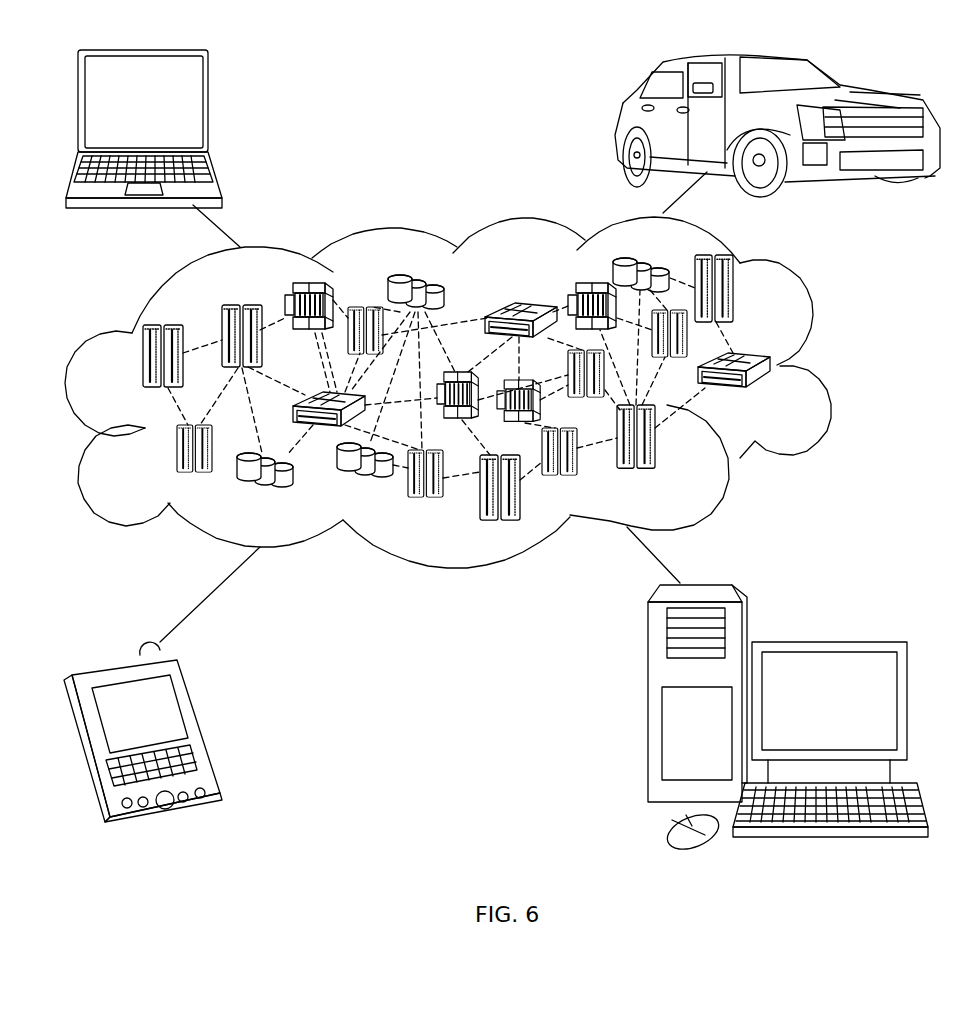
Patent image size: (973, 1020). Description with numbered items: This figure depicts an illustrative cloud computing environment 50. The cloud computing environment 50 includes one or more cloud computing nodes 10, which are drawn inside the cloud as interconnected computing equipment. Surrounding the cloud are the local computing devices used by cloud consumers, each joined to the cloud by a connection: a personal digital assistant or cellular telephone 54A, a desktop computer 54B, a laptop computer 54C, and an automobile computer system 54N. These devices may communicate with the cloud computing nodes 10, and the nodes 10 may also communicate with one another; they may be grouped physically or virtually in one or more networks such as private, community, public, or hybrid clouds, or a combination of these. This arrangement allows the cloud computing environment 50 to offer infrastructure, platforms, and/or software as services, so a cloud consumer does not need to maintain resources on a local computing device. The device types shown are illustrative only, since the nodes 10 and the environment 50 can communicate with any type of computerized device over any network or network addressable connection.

The cloud computing node 10 is at (780, 399).
The cloud computing environment 50 is at (828, 373).
The personal digital assistant or cellular telephone 54A is at (198, 727).
The desktop computer 54B is at (825, 642).
The laptop computer 54C is at (208, 110).
The automobile computer system 54N is at (617, 120).